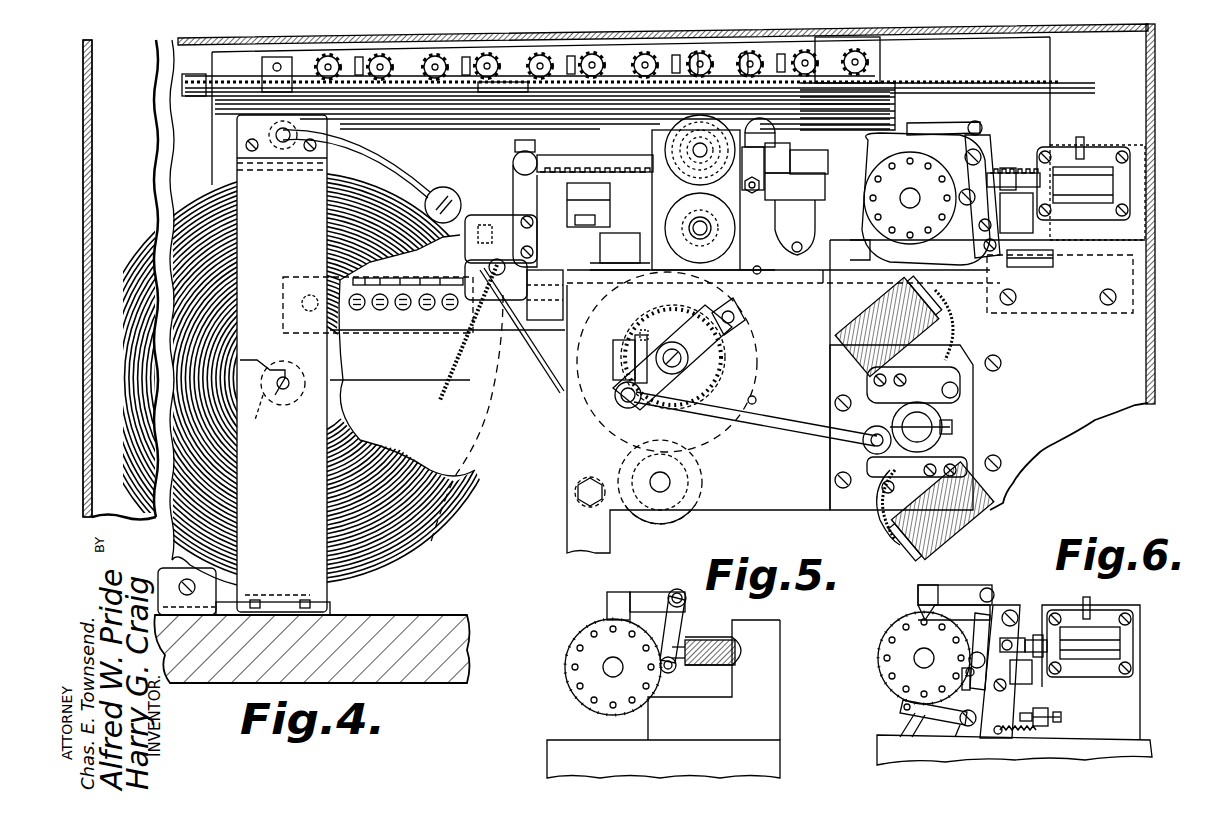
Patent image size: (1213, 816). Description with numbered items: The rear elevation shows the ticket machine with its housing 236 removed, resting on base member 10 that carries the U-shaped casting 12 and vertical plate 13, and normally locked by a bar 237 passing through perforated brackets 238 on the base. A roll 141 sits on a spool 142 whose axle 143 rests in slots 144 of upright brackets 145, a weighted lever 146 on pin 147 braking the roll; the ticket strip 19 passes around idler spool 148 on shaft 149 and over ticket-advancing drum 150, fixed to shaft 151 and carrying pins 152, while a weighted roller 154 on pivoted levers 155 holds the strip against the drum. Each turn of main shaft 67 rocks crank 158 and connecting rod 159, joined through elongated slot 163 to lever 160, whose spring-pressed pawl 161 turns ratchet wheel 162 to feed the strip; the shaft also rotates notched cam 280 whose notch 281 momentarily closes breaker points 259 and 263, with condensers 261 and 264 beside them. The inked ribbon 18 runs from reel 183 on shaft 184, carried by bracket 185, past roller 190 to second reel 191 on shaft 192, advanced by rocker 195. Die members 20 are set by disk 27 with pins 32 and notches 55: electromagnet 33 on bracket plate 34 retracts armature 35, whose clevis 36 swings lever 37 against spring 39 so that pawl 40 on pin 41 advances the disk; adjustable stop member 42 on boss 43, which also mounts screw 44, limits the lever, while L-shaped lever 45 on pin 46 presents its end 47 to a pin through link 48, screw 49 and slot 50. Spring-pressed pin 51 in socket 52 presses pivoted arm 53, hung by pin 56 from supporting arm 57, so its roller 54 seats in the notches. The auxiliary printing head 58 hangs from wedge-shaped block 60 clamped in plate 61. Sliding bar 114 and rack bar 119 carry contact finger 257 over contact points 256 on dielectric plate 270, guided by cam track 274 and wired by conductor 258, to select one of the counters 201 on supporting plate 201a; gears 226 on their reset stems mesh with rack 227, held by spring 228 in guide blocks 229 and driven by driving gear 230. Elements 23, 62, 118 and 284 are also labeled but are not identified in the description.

In FIG. 4, the base member 10 is at (405, 612).
In FIG. 4, the U-shaped casting 12 is at (573, 530).
In FIG. 4, the plate 13 is at (987, 375).
In FIG. 5, the plate 13 is at (663, 759).
In FIG. 6, the plate 13 is at (877, 755).
In FIG. 4, the inked ribbon 18 is at (830, 128).
In FIG. 4, the ticket strip 19 is at (550, 385).
In FIG. 4, the die member 20 is at (863, 237).
In FIG. 4, the shaft 23 is at (900, 198).
In FIG. 5, the shaft 23 is at (630, 652).
In FIG. 6, the shaft 23 is at (915, 662).
In FIG. 4, the disk 27 is at (910, 198).
In FIG. 5, the disk 27 is at (613, 667).
In FIG. 6, the disk 27 is at (885, 675).
In FIG. 4, the pins 32 is at (912, 219).
In FIG. 5, the pins 32 is at (570, 652).
In FIG. 6, the pins 32 is at (880, 668).
In FIG. 4, the electromagnet 33 is at (1113, 183).
In FIG. 6, the electromagnet 33 is at (1110, 612).
In FIG. 4, the bracket plate 34 is at (1123, 248).
In FIG. 5, the bracket plate 34 is at (714, 680).
In FIG. 6, the bracket plate 34 is at (1130, 700).
In FIG. 4, the armature 35 is at (1027, 177).
In FIG. 6, the armature 35 is at (1049, 646).
In FIG. 6, the clevis 36 is at (1012, 638).
In FIG. 4, the lever 37 is at (997, 207).
In FIG. 6, the lever 37 is at (1025, 672).
In FIG. 4, the spring 39 is at (1013, 282).
In FIG. 6, the spring 39 is at (1003, 733).
In FIG. 4, the pawl 40 is at (887, 137).
In FIG. 6, the pawl 40 is at (920, 608).
In FIG. 4, the pin 41 is at (982, 153).
In FIG. 6, the pin 41 is at (1013, 610).
In FIG. 6, the adjustable stop member 42 is at (1040, 712).
In FIG. 6, the boss 43 is at (1047, 718).
In FIG. 6, the screw 44 is at (1040, 733).
In FIG. 6, the L-shaped lever 45 is at (912, 740).
In FIG. 6, the pin 46 is at (968, 727).
In FIG. 6, the end 47 is at (903, 708).
In FIG. 6, the link 48 is at (962, 683).
In FIG. 6, the screw 49 is at (1017, 683).
In FIG. 6, the slot 50 is at (969, 658).
In FIG. 5, the spring-pressed pin 51 is at (688, 640).
In FIG. 5, the socket 52 is at (735, 637).
In FIG. 5, the pivoted arm 53 is at (683, 612).
In FIG. 6, the pivoted arm 53 is at (975, 630).
In FIG. 5, the roller 54 is at (673, 672).
In FIG. 5, the notches 55 is at (590, 700).
In FIG. 6, the notches 55 is at (880, 633).
In FIG. 5, the pin 56 is at (683, 593).
In FIG. 6, the pin 56 is at (992, 590).
In FIG. 4, the supporting arm 57 is at (947, 125).
In FIG. 5, the supporting arm 57 is at (655, 575).
In FIG. 6, the supporting arm 57 is at (965, 573).
In FIG. 4, the auxiliary printing head 58 is at (823, 272).
In FIG. 4, the wedge-shaped block 60 is at (790, 177).
In FIG. 4, the plate 61 is at (803, 190).
In FIG. 4, the block 62 is at (773, 180).
In FIG. 4, the main shaft 67 is at (880, 473).
In FIG. 4, the sliding bar 114 is at (548, 240).
In FIG. 4, the arm 118 is at (513, 180).
In FIG. 4, the rack bar 119 is at (573, 160).
In FIG. 4, the roll 141 is at (443, 523).
In FIG. 4, the spool 142 is at (263, 398).
In FIG. 4, the axle 143 is at (283, 392).
In FIG. 4, the slots 144 is at (257, 367).
In FIG. 4, the brackets 145 is at (282, 363).
In FIG. 4, the weighted lever 146 is at (400, 160).
In FIG. 4, the pin 147 is at (290, 135).
In FIG. 4, the idler spool 148 is at (700, 467).
In FIG. 4, the shaft 149 is at (670, 483).
In FIG. 4, the ticket-advancing drum 150 is at (758, 362).
In FIG. 4, the shaft 151 is at (688, 358).
In FIG. 4, the projecting pins 152 is at (770, 398).
In FIG. 4, the weighted roller 154 is at (563, 293).
In FIG. 4, the pivoted levers 155 is at (630, 247).
In FIG. 4, the crank 158 is at (890, 427).
In FIG. 4, the connecting rod 159 is at (750, 420).
In FIG. 4, the lever 160 is at (633, 360).
In FIG. 4, the spring-pressed pawl 161 is at (733, 350).
In FIG. 4, the ratchet wheel 162 is at (725, 380).
In FIG. 4, the elongated slot 163 is at (617, 400).
In FIG. 4, the reel 183 is at (690, 125).
In FIG. 4, the shaft 184 is at (693, 150).
In FIG. 4, the bracket 185 is at (667, 190).
In FIG. 4, the roller 190 is at (763, 274).
In FIG. 4, the reel 191 is at (700, 226).
In FIG. 4, the shaft 192 is at (703, 242).
In FIG. 4, the rocker 195 is at (777, 130).
In FIG. 4, the counters 201 is at (627, 50).
In FIG. 4, the supporting plate 201a is at (888, 92).
In FIG. 4, the gears 226 is at (445, 55).
In FIG. 4, the rack 227 is at (567, 60).
In FIG. 4, the spring 228 is at (730, 53).
In FIG. 4, the guide blocks 229 is at (492, 93).
In FIG. 4, the driving gear 230 is at (290, 58).
In FIG. 4, the housing 236 is at (88, 258).
In FIG. 4, the bar 237 is at (233, 575).
In FIG. 4, the perforated brackets 238 is at (217, 600).
In FIG. 4, the contact points 256 is at (427, 308).
In FIG. 4, the sliding contact 257 is at (523, 192).
In FIG. 4, the conductor 258 is at (453, 393).
In FIG. 4, the breaker points 259 is at (867, 387).
In FIG. 4, the condenser 261 is at (842, 317).
In FIG. 4, the breaker points 263 is at (947, 462).
In FIG. 4, the condenser 264 is at (990, 510).
In FIG. 4, the dielectric plate 270 is at (420, 333).
In FIG. 4, the cam track 274 is at (387, 278).
In FIG. 4, the notched cam 280 is at (943, 413).
In FIG. 4, the notch 281 is at (957, 393).
In FIG. 4, the contact 284 is at (943, 427).